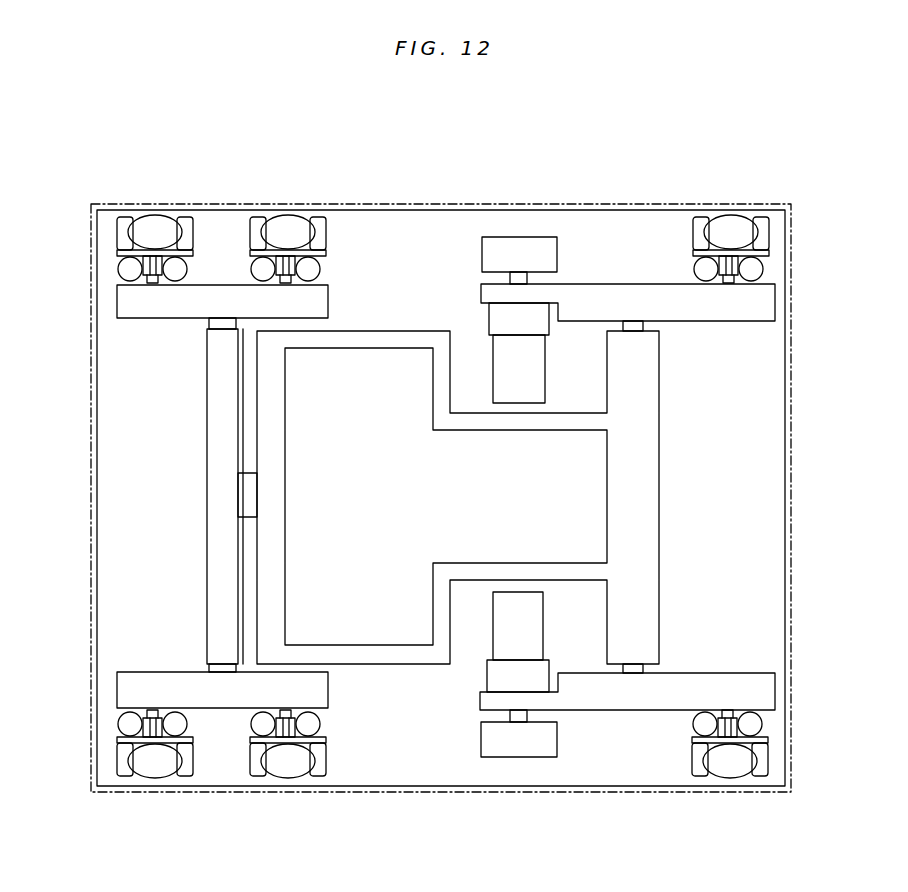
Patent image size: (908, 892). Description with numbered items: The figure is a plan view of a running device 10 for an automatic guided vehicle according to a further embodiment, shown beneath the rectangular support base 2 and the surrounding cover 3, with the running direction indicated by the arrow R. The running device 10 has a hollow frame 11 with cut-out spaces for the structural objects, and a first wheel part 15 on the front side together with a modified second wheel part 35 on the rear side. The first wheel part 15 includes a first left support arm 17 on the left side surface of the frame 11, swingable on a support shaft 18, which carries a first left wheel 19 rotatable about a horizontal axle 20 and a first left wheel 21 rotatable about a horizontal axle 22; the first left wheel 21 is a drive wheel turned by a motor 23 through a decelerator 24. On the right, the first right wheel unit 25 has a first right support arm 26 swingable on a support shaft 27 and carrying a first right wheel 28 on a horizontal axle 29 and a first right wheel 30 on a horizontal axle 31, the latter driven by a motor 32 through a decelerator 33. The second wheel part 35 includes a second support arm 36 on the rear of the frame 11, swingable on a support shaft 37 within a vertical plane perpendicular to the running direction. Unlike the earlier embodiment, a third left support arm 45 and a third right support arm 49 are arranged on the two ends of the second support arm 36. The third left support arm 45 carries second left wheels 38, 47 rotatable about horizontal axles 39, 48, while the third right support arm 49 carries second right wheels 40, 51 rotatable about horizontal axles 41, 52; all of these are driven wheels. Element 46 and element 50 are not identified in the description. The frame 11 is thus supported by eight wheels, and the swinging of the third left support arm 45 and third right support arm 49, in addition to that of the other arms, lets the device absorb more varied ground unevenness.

The support base 2 is at (780, 398).
The cover 3 is at (789, 345).
The running device 10 is at (96, 363).
The frame 11 is at (652, 492).
The first wheel part 15 is at (770, 751).
The first left support arm 17 is at (620, 290).
The support shaft 18 is at (640, 330).
The first left wheel 19 is at (770, 232).
The horizontal axle 20 is at (765, 282).
The first left wheel 21 is at (540, 243).
The horizontal axle 22 is at (510, 280).
The motor 23 is at (535, 370).
The decelerator 24 is at (492, 318).
The first right wheel unit 25 is at (735, 772).
The first right support arm 26 is at (615, 703).
The support shaft 27 is at (640, 663).
The first right wheel 28 is at (770, 762).
The horizontal axle 29 is at (765, 717).
The first right wheel 30 is at (522, 745).
The horizontal axle 31 is at (510, 716).
The motor 32 is at (537, 625).
The decelerator 33 is at (490, 675).
The second wheel part 35 is at (113, 539).
The second support arm 36 is at (215, 570).
The support shaft 37 is at (245, 492).
The second left wheel 38 is at (290, 228).
The horizontal axle 39 is at (320, 270).
The second right wheel 40 is at (290, 772).
The horizontal axle 41 is at (322, 717).
The third left support arm 45 is at (226, 286).
The upper joint 46 is at (214, 323).
The second left wheel 47 is at (148, 222).
The horizontal axle 48 is at (120, 268).
The third right support arm 49 is at (216, 700).
The lower joint 50 is at (214, 668).
The second right wheel 51 is at (150, 773).
The horizontal axle 52 is at (117, 717).